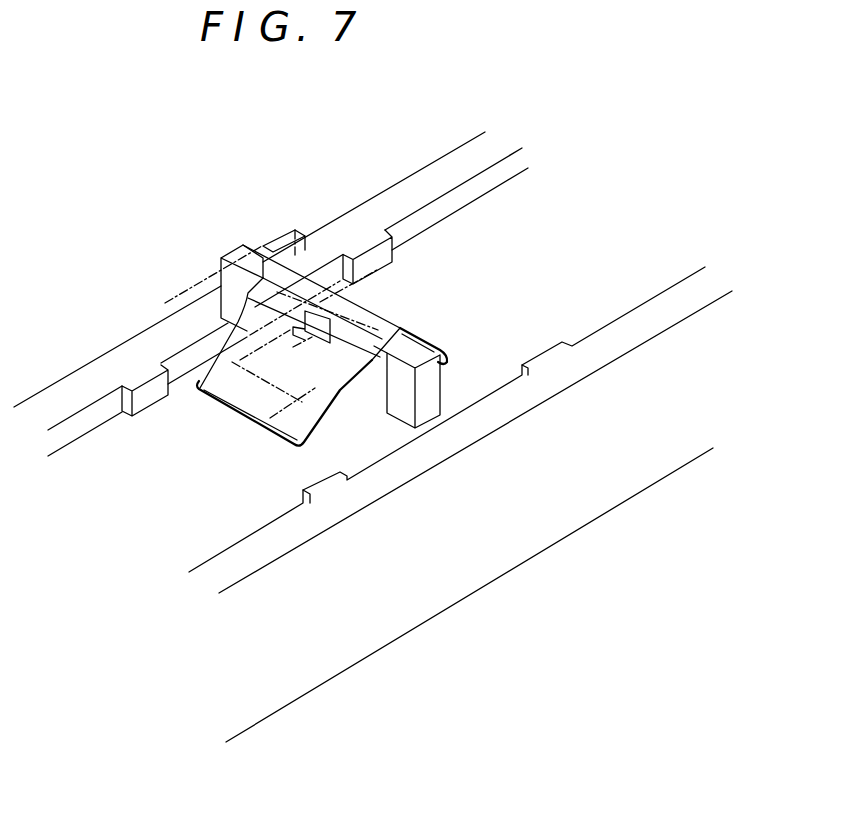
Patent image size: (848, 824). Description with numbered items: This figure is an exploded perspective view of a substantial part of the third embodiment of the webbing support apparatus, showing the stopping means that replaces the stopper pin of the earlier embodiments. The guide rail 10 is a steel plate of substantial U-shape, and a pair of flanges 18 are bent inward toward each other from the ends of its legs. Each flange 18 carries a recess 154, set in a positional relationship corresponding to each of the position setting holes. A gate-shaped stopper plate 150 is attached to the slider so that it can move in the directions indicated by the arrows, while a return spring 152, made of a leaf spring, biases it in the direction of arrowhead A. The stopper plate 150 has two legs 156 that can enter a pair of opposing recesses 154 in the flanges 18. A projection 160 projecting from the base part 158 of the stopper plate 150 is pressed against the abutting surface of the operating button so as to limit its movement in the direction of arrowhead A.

The guide rail 10 is at (420, 146).
The flanges 18 is at (479, 139).
The stopper plate 150 is at (244, 240).
The return spring 152 is at (245, 333).
The recess 154 is at (167, 360).
The legs 156 is at (226, 276).
The base part 158 is at (412, 333).
The projection 160 is at (378, 306).